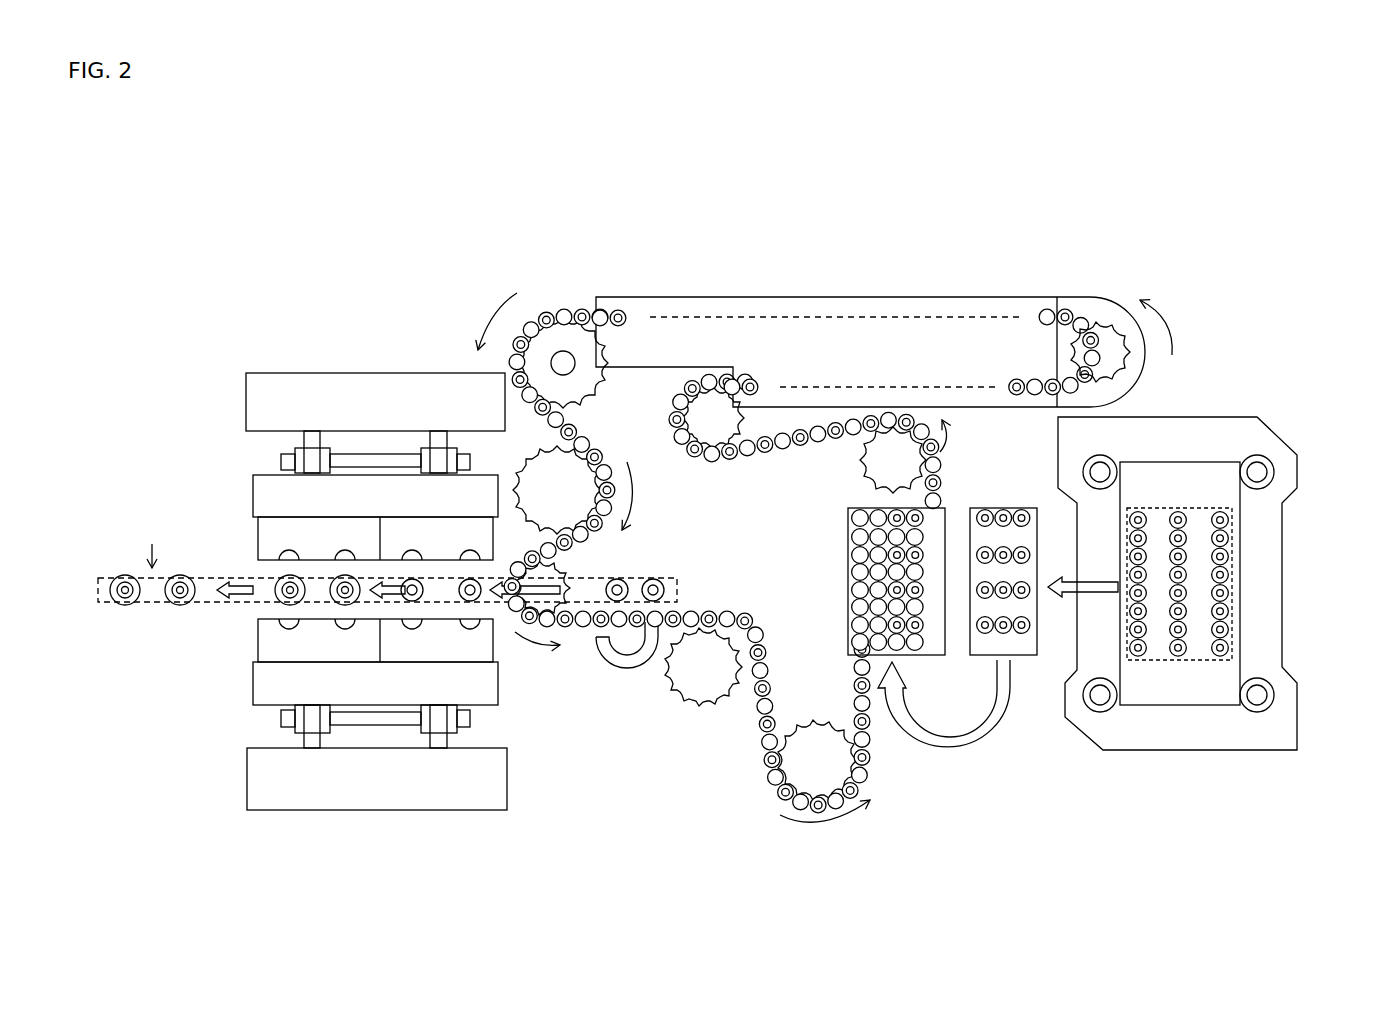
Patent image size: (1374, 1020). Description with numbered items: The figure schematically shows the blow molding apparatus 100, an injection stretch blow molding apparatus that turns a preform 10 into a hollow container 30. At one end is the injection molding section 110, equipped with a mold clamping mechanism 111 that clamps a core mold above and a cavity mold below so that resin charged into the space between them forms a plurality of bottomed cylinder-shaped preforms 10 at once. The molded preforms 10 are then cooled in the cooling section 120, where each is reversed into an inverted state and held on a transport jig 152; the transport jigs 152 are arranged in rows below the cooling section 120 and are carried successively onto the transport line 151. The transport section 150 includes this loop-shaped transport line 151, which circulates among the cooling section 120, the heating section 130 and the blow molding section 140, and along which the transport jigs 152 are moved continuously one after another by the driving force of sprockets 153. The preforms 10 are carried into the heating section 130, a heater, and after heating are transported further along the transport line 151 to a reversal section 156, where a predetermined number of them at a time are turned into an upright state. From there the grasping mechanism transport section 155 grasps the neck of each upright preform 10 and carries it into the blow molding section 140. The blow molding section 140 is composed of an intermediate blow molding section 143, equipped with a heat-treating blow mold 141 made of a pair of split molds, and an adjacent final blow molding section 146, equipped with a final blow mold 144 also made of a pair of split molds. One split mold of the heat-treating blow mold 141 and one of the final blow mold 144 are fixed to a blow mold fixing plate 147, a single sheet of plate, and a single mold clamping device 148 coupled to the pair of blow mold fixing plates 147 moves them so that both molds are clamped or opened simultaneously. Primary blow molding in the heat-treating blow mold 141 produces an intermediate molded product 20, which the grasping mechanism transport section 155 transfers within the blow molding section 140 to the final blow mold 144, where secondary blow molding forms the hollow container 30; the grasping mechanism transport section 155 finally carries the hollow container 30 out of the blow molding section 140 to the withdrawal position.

The preform 10 is at (412, 600).
The intermediate molded product 20 is at (290, 600).
The hollow container 30 is at (125, 602).
The blow molding apparatus 100 is at (1203, 190).
The injection molding section 110 is at (1292, 419).
The mold clamping mechanism 111 is at (1270, 624).
The cooling section 120 is at (957, 668).
The heating section 130 is at (855, 284).
The blow molding section 140 is at (372, 246).
The heat-treating blow mold 141 is at (468, 648).
The intermediate blow molding section 143 is at (432, 367).
The final blow mold 144 is at (270, 526).
The final blow molding section 146 is at (312, 367).
The blow mold fixing plate 147 is at (270, 486).
The mold clamping device 148 is at (305, 436).
The transport section 150 is at (674, 557).
The transport line 151 is at (755, 718).
The transport jig 152 is at (935, 485).
The sprocket 153 is at (885, 462).
The grasping mechanism transport section 155 is at (690, 592).
The reversal section 156 is at (616, 680).